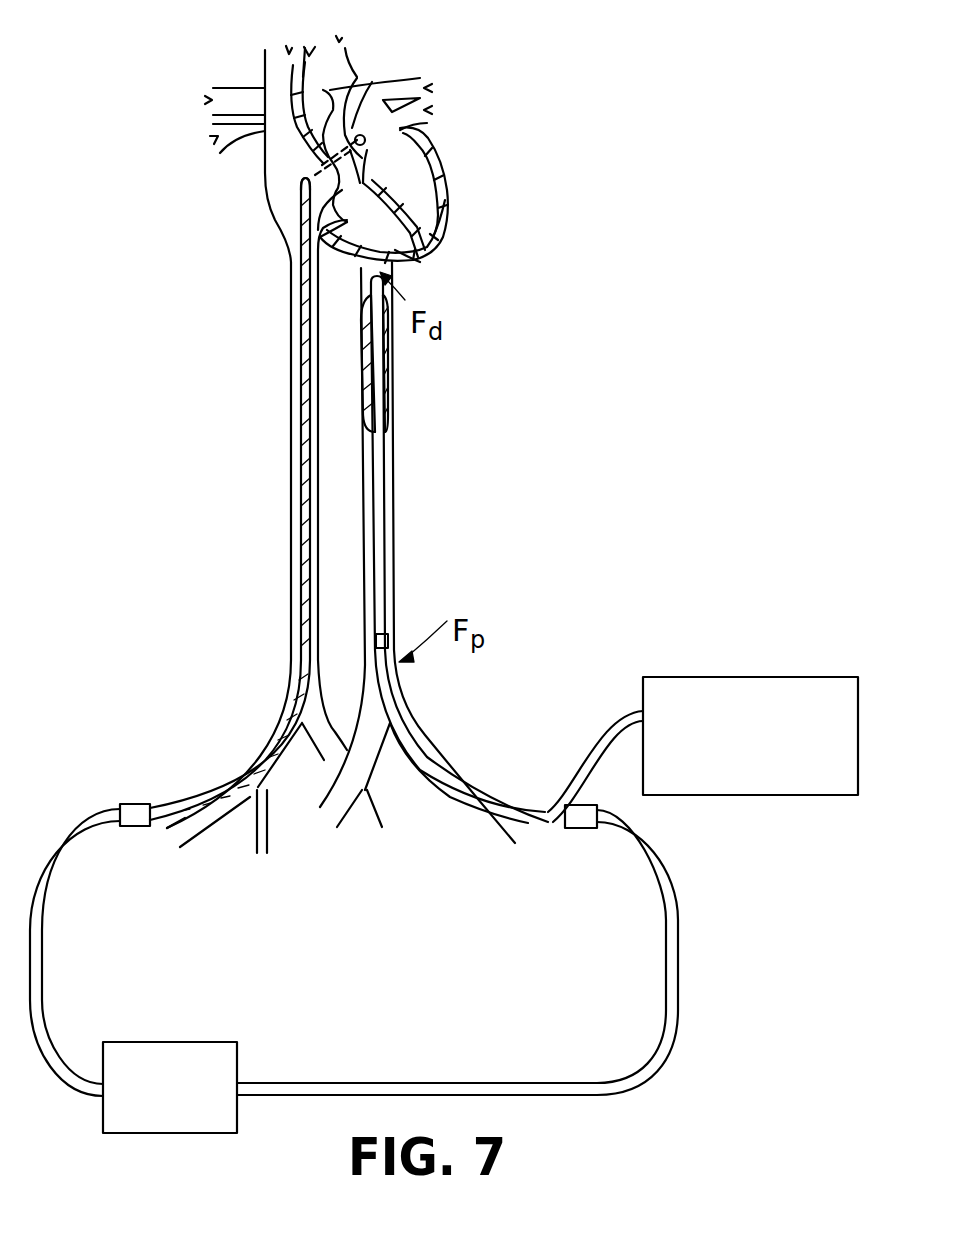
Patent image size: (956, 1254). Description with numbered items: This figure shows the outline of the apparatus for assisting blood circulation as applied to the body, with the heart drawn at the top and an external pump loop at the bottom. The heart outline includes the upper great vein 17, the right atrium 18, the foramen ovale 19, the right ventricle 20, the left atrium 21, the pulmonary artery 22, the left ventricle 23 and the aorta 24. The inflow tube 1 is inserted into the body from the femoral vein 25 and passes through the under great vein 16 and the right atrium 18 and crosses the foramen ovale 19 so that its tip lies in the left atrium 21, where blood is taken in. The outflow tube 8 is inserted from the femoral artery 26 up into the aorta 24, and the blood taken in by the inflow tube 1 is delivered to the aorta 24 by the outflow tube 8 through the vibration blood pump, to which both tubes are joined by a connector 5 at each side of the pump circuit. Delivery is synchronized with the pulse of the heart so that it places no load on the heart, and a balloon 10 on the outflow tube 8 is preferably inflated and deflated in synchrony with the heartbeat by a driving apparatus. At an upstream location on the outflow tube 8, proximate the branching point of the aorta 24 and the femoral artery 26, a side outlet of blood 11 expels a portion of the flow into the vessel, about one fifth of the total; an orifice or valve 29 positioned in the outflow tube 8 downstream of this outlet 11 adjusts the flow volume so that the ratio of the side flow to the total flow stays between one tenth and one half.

The inflow tube 1 is at (293, 338).
The connector 5 is at (133, 802).
The outflow tube 8 is at (387, 382).
The balloon 10 is at (387, 337).
The outlet of blood 11 is at (397, 687).
The under great vein 16 is at (293, 257).
The upper great vein 17 is at (270, 72).
The right atrium 18 is at (313, 190).
The foramen ovale 19 is at (312, 173).
The right ventricle 20 is at (403, 257).
The left atrium 21 is at (385, 96).
The pulmonary artery 22 is at (372, 82).
The left ventricle 23 is at (413, 193).
The aorta 24 is at (355, 83).
The femoral vein 25 is at (205, 800).
The femoral artery 26 is at (480, 790).
The orifice or valve 29 is at (388, 640).